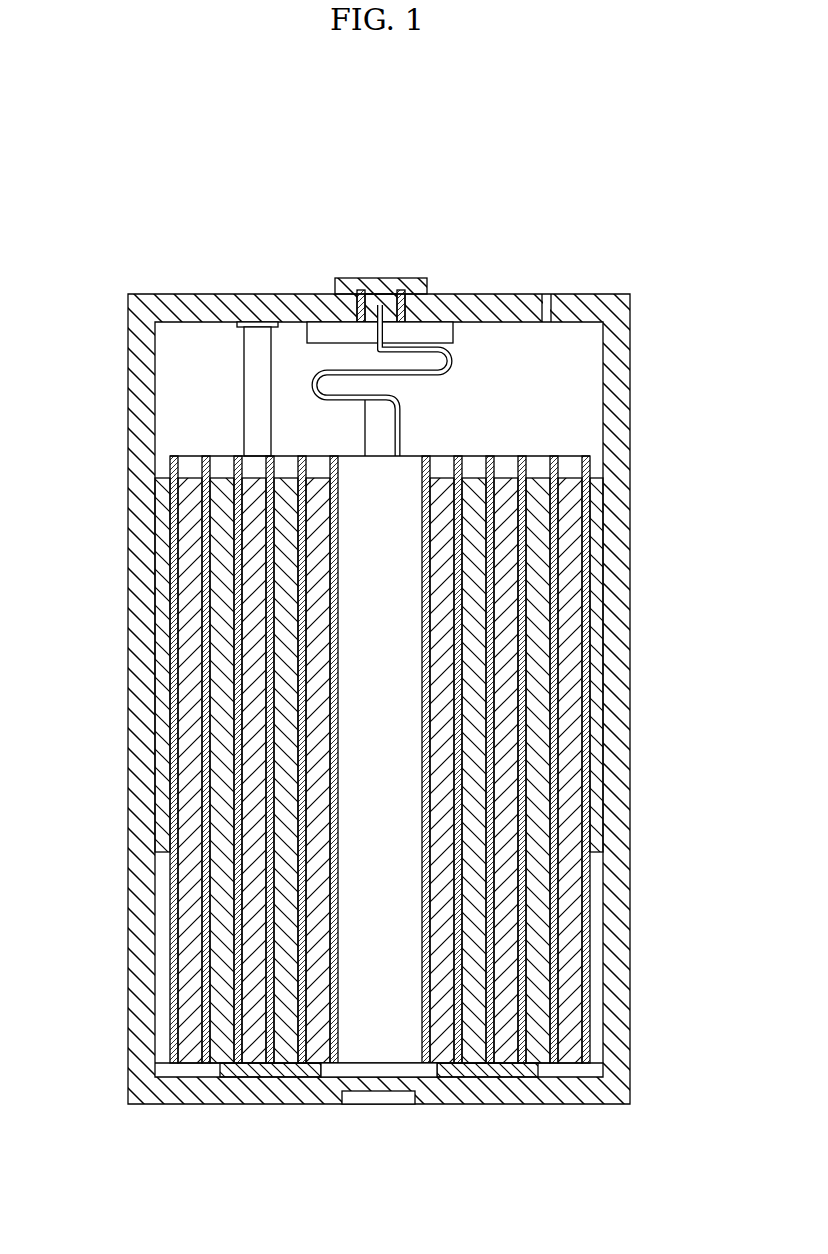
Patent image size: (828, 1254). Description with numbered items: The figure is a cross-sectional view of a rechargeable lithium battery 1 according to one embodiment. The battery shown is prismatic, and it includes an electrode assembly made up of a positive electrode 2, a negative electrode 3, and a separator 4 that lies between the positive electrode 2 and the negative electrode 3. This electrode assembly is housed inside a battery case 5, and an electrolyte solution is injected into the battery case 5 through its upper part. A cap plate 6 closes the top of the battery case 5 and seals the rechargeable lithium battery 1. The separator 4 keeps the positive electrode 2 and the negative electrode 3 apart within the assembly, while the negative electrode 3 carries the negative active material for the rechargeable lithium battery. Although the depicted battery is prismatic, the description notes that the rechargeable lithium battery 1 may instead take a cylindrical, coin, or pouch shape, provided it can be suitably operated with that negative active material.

The rechargeable lithium battery 1 is at (532, 234).
The positive electrode 2 is at (565, 905).
The negative electrode 3 is at (223, 908).
The separator 4 is at (202, 1025).
The battery case 5 is at (145, 374).
The cap plate 6 is at (340, 278).